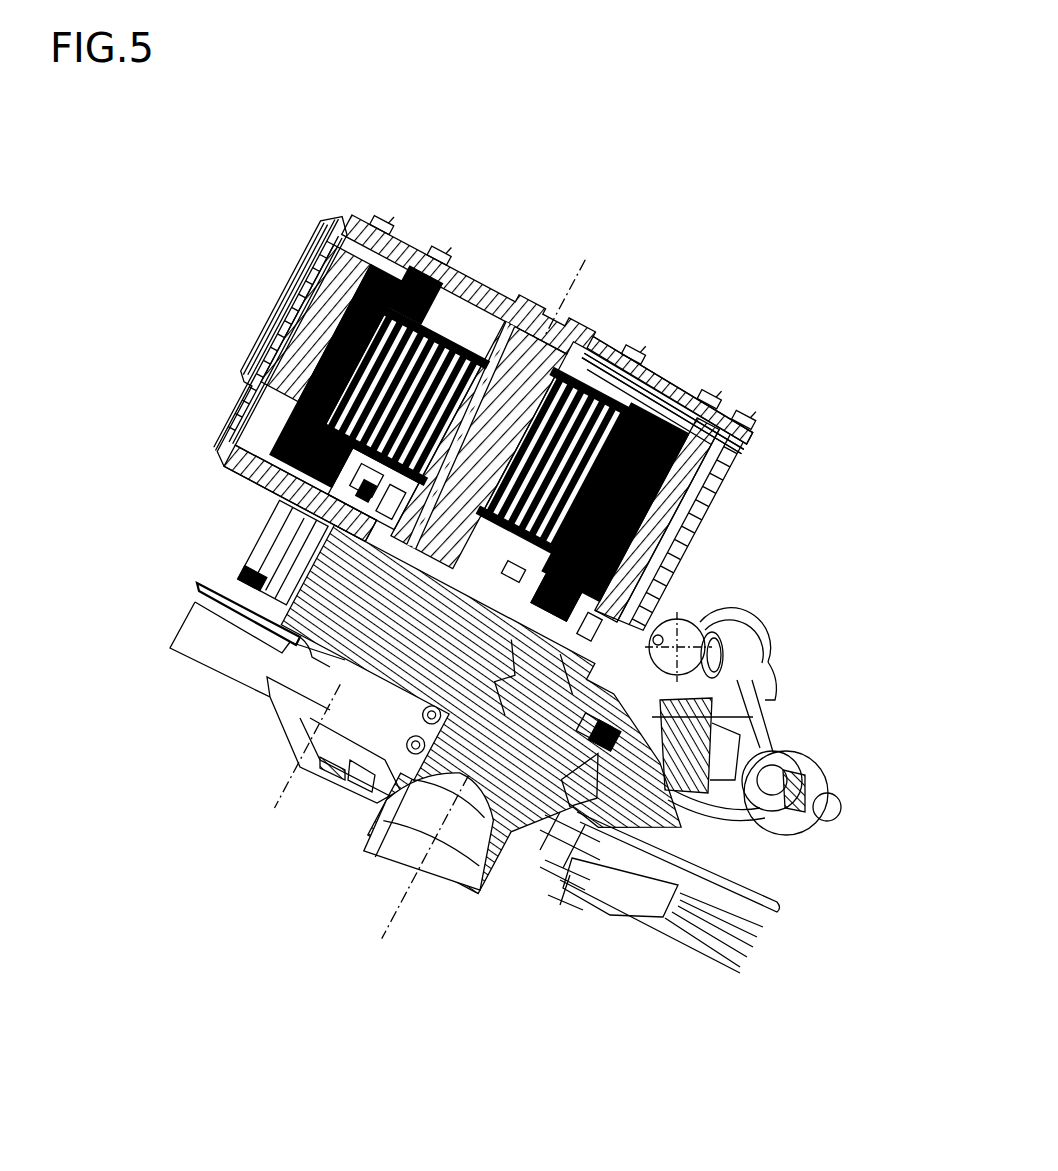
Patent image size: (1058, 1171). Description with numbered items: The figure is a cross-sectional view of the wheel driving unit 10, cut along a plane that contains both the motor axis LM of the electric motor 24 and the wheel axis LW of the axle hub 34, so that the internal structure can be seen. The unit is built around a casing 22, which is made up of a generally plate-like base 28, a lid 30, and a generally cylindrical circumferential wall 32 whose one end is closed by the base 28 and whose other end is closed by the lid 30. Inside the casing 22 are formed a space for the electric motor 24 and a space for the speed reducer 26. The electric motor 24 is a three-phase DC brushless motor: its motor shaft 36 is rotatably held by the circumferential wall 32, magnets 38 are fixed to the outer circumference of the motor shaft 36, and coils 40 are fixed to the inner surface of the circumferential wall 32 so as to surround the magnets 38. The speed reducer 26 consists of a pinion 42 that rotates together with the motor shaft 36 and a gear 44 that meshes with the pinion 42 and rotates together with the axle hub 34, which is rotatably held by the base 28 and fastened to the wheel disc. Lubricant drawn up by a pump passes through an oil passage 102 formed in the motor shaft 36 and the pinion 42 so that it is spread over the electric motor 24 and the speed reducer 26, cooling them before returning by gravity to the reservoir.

The wheel driving unit 10 is at (160, 290).
The lid 30 is at (410, 240).
The circumferential wall 32 is at (236, 462).
The oil passage 102 is at (495, 335).
The motor axis LM is at (563, 290).
The motor shaft 36 is at (590, 420).
The electric motor 24 is at (668, 368).
The magnets 38 is at (652, 378).
The coils 40 is at (716, 490).
The casing 22 is at (685, 572).
The gear 44 is at (732, 715).
The pinion 42 is at (282, 522).
The base 28 is at (216, 624).
The speed reducer 26 is at (342, 712).
The axle hub 34 is at (392, 840).
The wheel axis LW is at (405, 938).